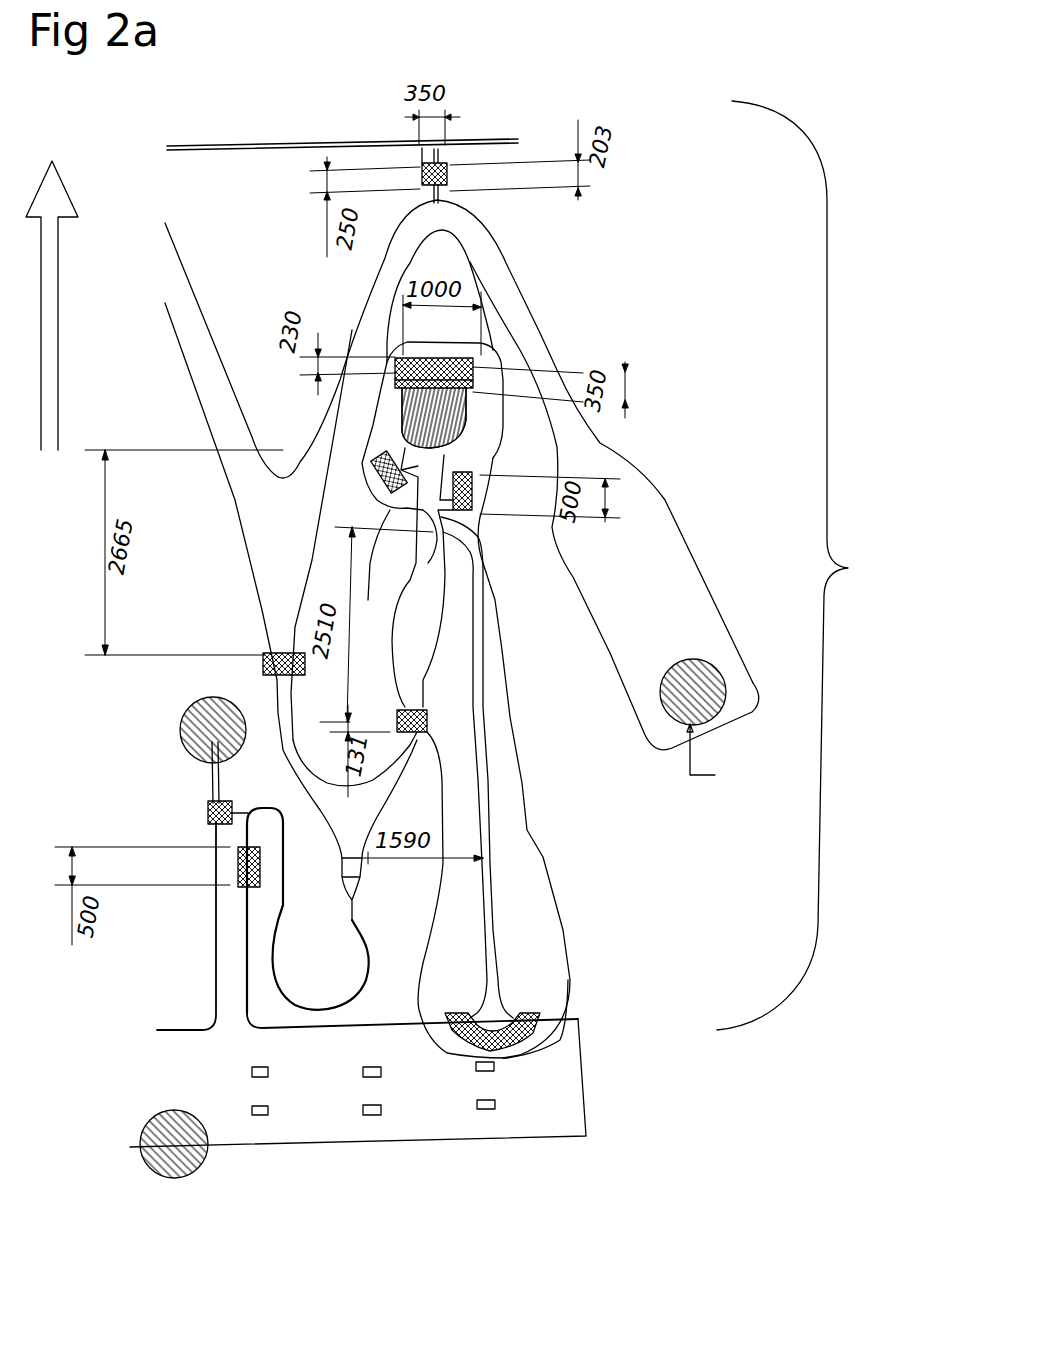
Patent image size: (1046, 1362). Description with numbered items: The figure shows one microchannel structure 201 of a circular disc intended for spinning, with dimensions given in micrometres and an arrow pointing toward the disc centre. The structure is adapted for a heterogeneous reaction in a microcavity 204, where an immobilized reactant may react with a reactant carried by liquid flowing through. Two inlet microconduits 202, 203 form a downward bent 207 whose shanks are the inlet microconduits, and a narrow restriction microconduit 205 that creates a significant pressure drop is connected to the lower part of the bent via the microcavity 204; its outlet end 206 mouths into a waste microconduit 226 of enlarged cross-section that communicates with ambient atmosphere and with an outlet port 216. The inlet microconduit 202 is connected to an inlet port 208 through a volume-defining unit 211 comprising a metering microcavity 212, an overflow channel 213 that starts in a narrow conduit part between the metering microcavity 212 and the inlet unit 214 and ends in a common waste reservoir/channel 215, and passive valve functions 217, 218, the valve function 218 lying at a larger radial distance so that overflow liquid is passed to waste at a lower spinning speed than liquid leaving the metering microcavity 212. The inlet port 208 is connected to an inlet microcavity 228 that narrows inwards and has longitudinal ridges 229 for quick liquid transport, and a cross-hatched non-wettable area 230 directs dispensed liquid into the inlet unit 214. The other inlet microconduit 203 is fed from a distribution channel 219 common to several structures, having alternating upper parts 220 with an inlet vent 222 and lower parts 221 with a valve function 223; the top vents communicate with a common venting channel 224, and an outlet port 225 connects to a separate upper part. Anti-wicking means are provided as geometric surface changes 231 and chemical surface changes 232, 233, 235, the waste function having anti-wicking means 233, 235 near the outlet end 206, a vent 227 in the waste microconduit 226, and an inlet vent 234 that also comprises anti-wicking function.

The microchannel structure 201 is at (813, 565).
The inlet microconduit 202 is at (393, 770).
The inlet microconduit 203 is at (276, 696).
The microcavity 204 is at (343, 870).
The restriction microconduit 205 is at (325, 1008).
The outlet end 206 is at (203, 787).
The downward bent 207 is at (353, 797).
The inlet port 208 is at (477, 355).
The volume-defining unit 211 is at (497, 604).
The metering microcavity 212 is at (420, 603).
The overflow channel 213 is at (480, 670).
The inlet unit 214 is at (497, 363).
The common waste reservoir/channel 215 is at (538, 1103).
The outlet port 216 is at (157, 1175).
The valve function 217 is at (430, 723).
The valve function 218 is at (550, 1015).
The distribution channel 219 is at (197, 347).
The upper part 220 is at (467, 227).
The lower part 221 is at (263, 513).
The inlet vent 222 is at (440, 153).
The valve function 223 is at (248, 649).
The common venting channel 224 is at (258, 147).
The outlet port 225 is at (677, 633).
The waste microconduit 226 is at (232, 985).
The vent 227 is at (203, 770).
The inlet microcavity 228 is at (384, 357).
The longitudinal projections (ridges) 229 is at (450, 437).
The non-wettable area 230 is at (432, 358).
The geometric surface characteristics 231 is at (377, 457).
The chemical surface characteristics 232 is at (380, 477).
The anti-wicking means 233 is at (233, 867).
The inlet vent 234 is at (450, 160).
The vent / anti-wicking means 235 is at (210, 812).